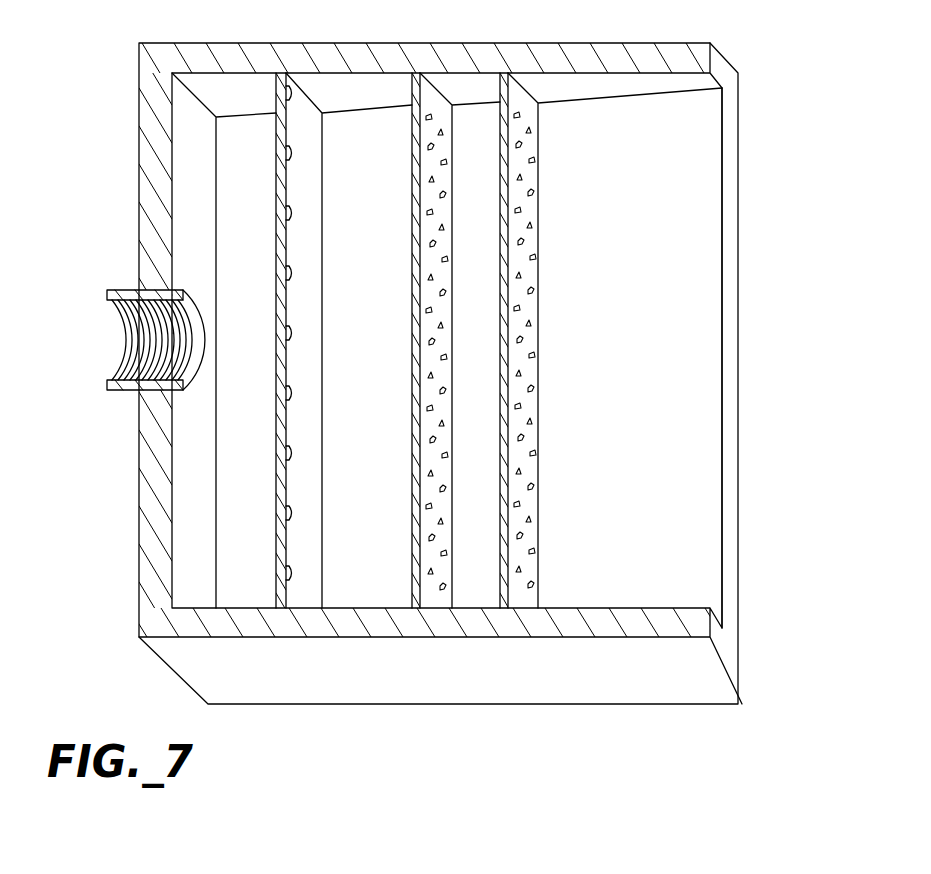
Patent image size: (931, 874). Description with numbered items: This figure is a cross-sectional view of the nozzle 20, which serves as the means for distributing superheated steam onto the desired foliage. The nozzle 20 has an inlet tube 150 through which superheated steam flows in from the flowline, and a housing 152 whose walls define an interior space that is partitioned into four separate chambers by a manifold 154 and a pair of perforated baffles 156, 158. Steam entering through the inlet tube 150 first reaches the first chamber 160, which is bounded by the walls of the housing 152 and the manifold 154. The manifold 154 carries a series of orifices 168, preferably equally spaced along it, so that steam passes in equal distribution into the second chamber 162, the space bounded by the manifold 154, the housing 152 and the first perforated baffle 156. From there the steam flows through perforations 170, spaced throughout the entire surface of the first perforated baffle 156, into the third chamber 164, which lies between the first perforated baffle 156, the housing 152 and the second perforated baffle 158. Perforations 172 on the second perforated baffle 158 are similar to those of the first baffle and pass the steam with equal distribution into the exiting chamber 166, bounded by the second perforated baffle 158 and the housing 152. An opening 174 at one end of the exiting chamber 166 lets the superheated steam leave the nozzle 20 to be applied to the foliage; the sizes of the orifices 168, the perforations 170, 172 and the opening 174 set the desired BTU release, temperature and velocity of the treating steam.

The nozzle 20 is at (745, 42).
The inlet tube 150 is at (132, 290).
The housing 152 is at (351, 60).
The manifold 154 is at (306, 592).
The first perforated baffle 156 is at (435, 592).
The second perforated baffle 158 is at (522, 592).
The first chamber 160 is at (263, 353).
The second chamber 162 is at (385, 353).
The third chamber 164 is at (493, 353).
The exiting chamber 166 is at (652, 353).
The orifices 168 is at (278, 510).
The perforations 170 is at (440, 115).
The perforations 172 is at (528, 110).
The opening 174 is at (683, 218).